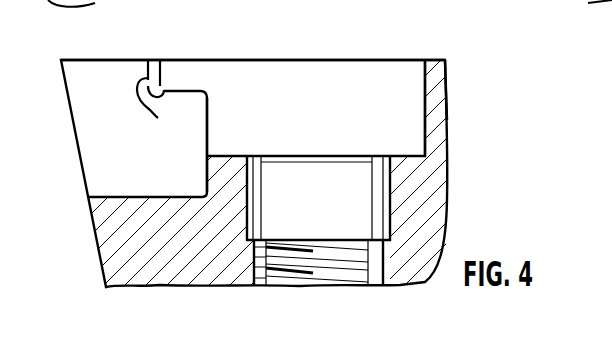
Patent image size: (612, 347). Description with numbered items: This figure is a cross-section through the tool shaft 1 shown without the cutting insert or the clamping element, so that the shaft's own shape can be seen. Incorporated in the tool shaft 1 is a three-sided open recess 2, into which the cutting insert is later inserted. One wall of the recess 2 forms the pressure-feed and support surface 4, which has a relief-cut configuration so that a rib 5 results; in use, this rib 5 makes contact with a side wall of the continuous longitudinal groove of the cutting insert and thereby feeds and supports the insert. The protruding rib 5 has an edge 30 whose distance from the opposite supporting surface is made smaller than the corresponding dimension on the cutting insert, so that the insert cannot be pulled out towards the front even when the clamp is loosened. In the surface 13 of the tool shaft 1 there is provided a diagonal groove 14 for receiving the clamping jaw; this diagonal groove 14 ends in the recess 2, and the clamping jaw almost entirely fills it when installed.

The tool shaft 1 is at (117, 232).
The recess 2 is at (102, 160).
The pressure-feed and support surface 4 is at (207, 122).
The rib 5 is at (158, 72).
The edge 30 is at (165, 93).
The surface 13 is at (427, 59).
The diagonal groove 14 is at (353, 95).